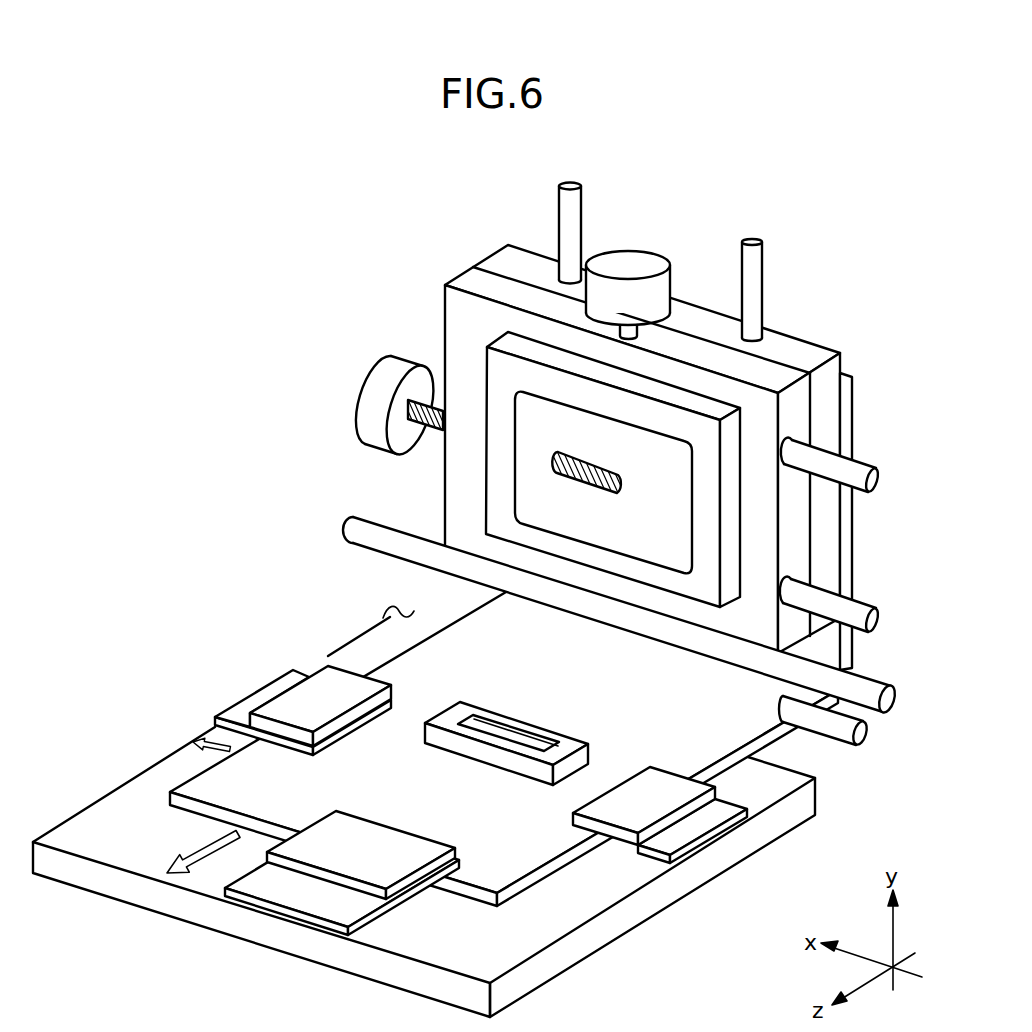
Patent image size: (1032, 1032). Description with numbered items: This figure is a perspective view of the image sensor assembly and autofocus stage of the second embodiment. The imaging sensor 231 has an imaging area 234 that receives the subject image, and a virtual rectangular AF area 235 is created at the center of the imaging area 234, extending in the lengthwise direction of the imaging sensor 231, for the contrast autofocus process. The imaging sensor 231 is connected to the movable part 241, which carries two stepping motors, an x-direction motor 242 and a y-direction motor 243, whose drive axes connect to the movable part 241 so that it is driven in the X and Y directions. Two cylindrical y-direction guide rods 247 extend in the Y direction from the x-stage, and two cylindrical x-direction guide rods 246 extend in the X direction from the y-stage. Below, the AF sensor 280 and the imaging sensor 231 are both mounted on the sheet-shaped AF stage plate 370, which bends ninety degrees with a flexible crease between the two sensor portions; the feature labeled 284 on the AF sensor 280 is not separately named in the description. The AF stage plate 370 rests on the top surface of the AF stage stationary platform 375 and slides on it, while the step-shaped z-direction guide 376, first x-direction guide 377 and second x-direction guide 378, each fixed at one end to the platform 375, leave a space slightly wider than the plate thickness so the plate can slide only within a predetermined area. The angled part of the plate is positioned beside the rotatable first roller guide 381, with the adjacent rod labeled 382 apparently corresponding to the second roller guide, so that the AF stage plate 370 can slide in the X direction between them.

The imaging sensor 231 is at (486, 468).
The imaging area 234 is at (513, 497).
The AF area 235 is at (590, 446).
The movable part 241 is at (498, 280).
The x-direction motor 242 is at (660, 263).
The y-direction motor 243 is at (376, 373).
The x-direction guide rods 246 is at (873, 488).
The y-direction guide rods 247 is at (581, 212).
The AF sensor 280 is at (493, 762).
The slot 284 is at (523, 738).
The AF stage plate 370 is at (460, 890).
The AF stage stationary platform 375 is at (138, 898).
The z-direction guide 376 is at (285, 914).
The first x-direction guide 377 is at (650, 858).
The second x-direction guide 378 is at (263, 683).
The first roller guide 381 is at (892, 712).
The guide shaft 382 is at (778, 763).